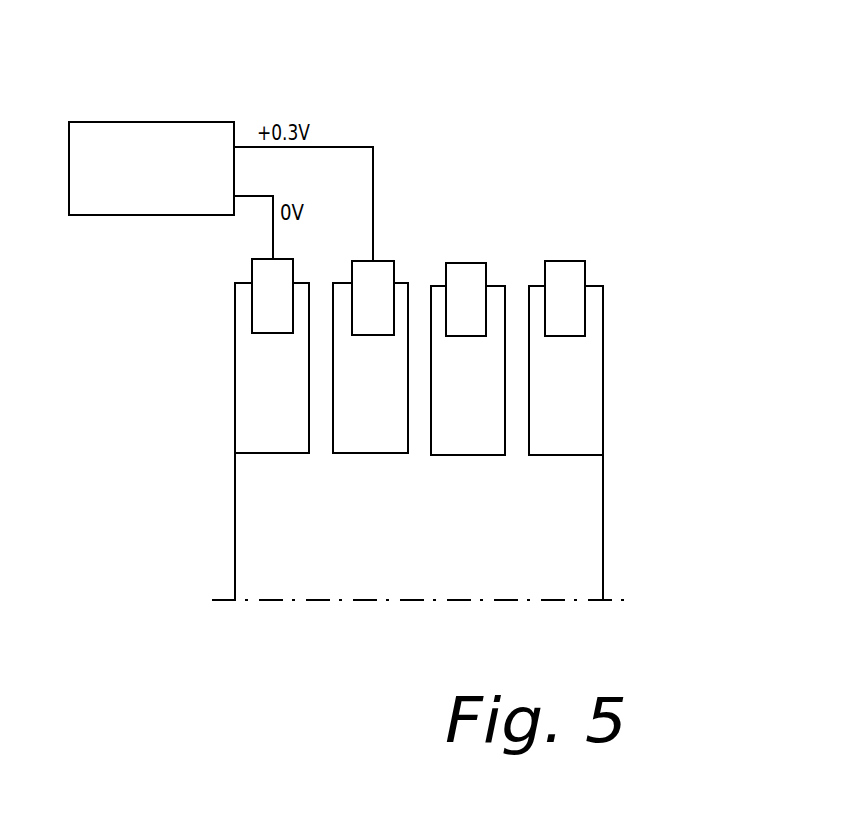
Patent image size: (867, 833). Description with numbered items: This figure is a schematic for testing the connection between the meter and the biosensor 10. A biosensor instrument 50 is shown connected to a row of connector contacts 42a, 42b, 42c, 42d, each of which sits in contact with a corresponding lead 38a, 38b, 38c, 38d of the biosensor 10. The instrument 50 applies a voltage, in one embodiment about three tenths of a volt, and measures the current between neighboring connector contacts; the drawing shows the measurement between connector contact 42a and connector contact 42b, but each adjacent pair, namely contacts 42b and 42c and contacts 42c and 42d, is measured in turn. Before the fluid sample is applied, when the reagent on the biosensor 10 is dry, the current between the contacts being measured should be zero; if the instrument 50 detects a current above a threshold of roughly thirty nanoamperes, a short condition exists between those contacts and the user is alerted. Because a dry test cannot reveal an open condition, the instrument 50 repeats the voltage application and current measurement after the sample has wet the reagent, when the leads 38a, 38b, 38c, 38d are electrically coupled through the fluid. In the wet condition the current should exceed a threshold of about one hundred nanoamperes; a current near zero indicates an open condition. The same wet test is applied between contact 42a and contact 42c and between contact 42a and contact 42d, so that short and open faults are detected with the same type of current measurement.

The biosensor 10 is at (647, 553).
The biosensor instrument 50 is at (109, 122).
The first well 38a is at (243, 439).
The second well 38b is at (400, 455).
The third well 38c is at (492, 455).
The fourth well 38d is at (592, 441).
The connector contact 42a is at (252, 266).
The connector contact 42b is at (360, 261).
The connector contact 42c is at (451, 263).
The connector contact 42d is at (585, 275).